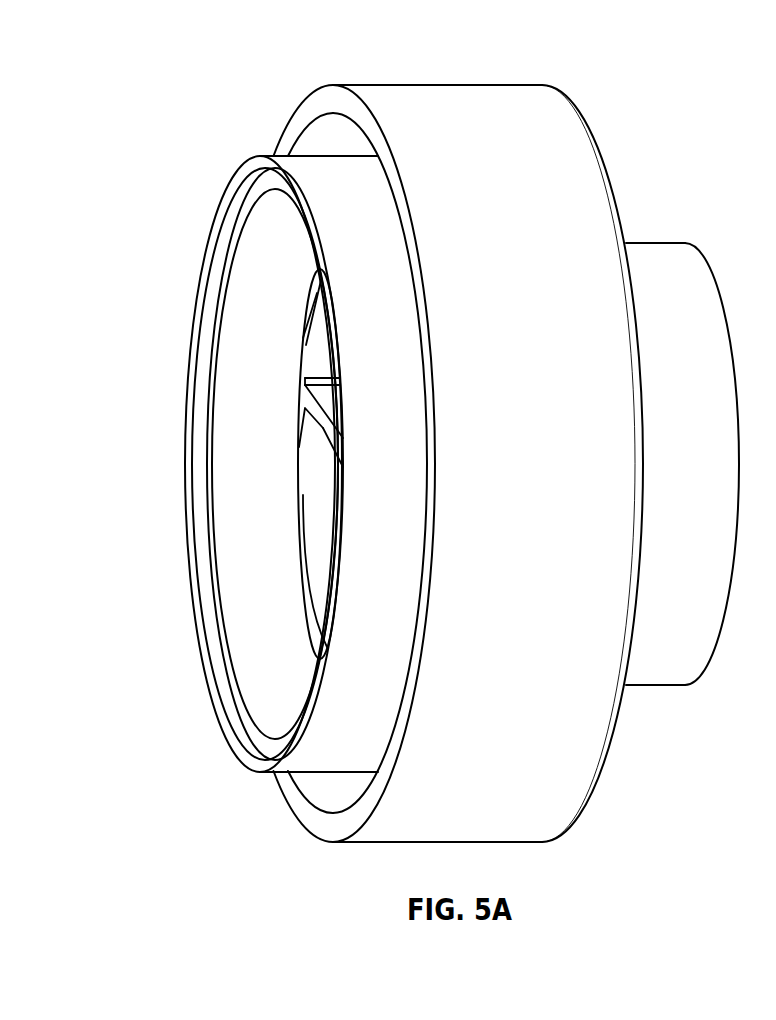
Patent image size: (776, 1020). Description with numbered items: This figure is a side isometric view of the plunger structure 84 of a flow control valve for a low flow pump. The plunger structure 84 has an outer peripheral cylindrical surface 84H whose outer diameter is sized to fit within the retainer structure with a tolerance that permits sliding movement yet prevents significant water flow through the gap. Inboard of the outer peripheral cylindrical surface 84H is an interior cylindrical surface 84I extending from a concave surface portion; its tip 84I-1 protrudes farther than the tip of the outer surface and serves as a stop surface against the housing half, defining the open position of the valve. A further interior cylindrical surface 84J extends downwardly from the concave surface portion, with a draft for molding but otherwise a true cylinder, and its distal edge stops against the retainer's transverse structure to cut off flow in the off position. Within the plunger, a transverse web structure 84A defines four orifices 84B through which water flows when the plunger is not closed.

The plunger structure 84 is at (547, 60).
The outer peripheral cylindrical surface 84H is at (320, 103).
The interior cylindrical surface 84I is at (318, 168).
The tip of interior cylindrical surface 84I-1 is at (252, 167).
The interior cylindrical surface 84J is at (656, 258).
The transverse web structure 84A is at (322, 425).
The orifices 84B is at (318, 467).